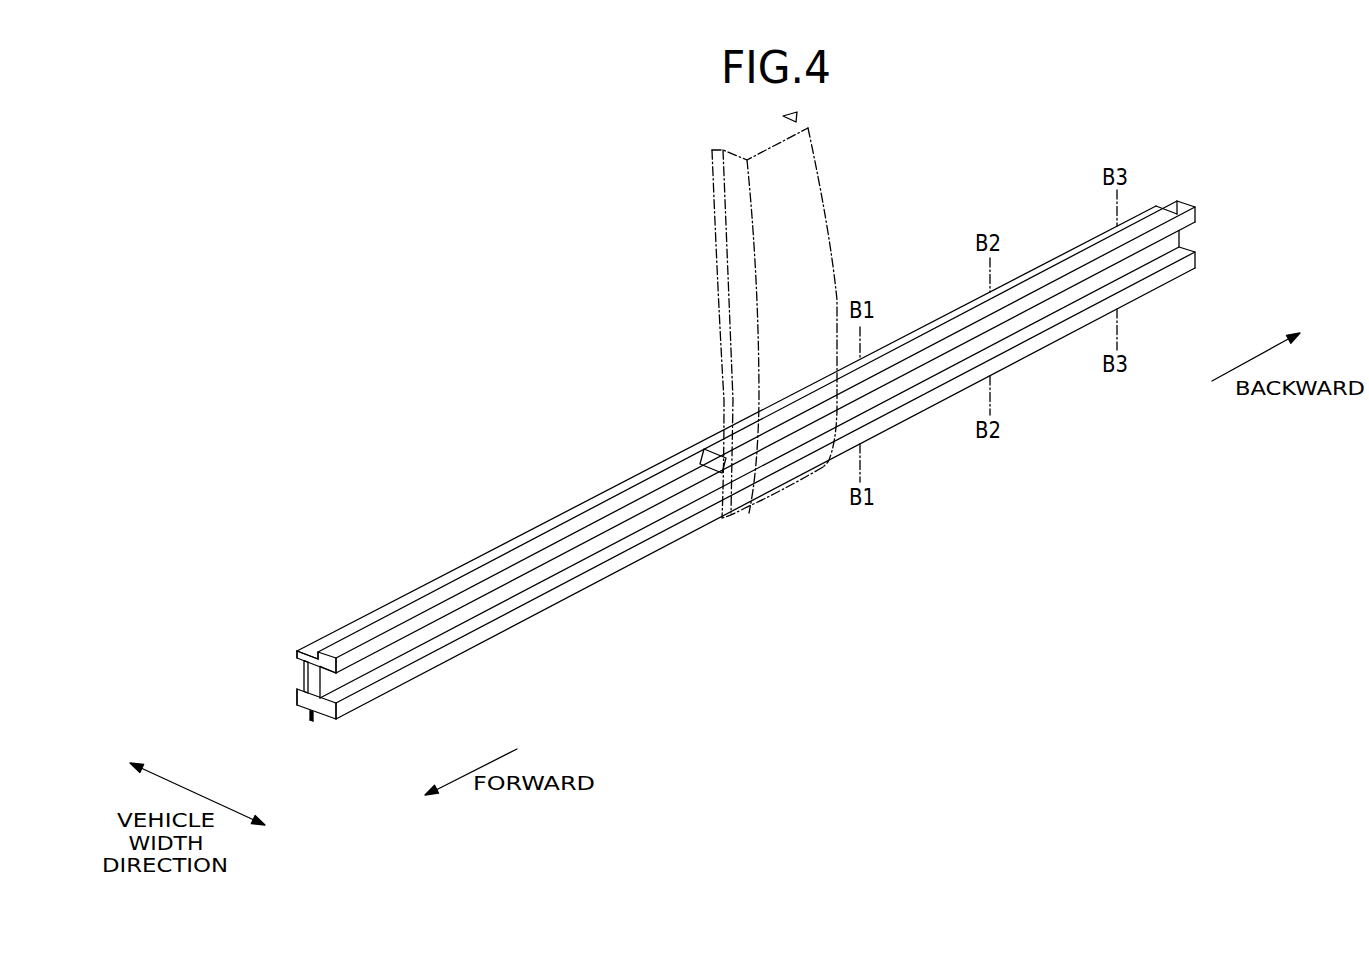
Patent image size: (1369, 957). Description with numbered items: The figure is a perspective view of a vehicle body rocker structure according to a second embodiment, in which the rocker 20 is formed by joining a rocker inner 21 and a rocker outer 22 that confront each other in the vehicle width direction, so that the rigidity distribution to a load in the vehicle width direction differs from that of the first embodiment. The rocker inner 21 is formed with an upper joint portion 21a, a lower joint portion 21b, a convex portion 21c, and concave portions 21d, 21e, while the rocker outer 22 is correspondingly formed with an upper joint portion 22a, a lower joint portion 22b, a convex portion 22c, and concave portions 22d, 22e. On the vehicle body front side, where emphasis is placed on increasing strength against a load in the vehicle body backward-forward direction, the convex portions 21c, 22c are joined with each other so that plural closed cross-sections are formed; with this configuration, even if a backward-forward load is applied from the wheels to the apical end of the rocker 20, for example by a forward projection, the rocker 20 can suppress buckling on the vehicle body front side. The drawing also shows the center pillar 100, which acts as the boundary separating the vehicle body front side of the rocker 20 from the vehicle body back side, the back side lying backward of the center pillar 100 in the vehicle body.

The center pillar 100 is at (821, 188).
The rocker 20 is at (710, 474).
The rocker inner 21 is at (701, 475).
The upper joint portion 21a is at (318, 651).
The lower joint portion 21b is at (308, 714).
The convex portion 21c is at (302, 680).
The concave portion 21d is at (297, 658).
The concave portion 21e is at (297, 697).
The rocker outer 22 is at (746, 474).
The upper joint portion 22a is at (352, 643).
The lower joint portion 22b is at (320, 718).
The convex portion 22c is at (325, 688).
The concave portion 22d is at (372, 661).
The concave portion 22e is at (467, 646).